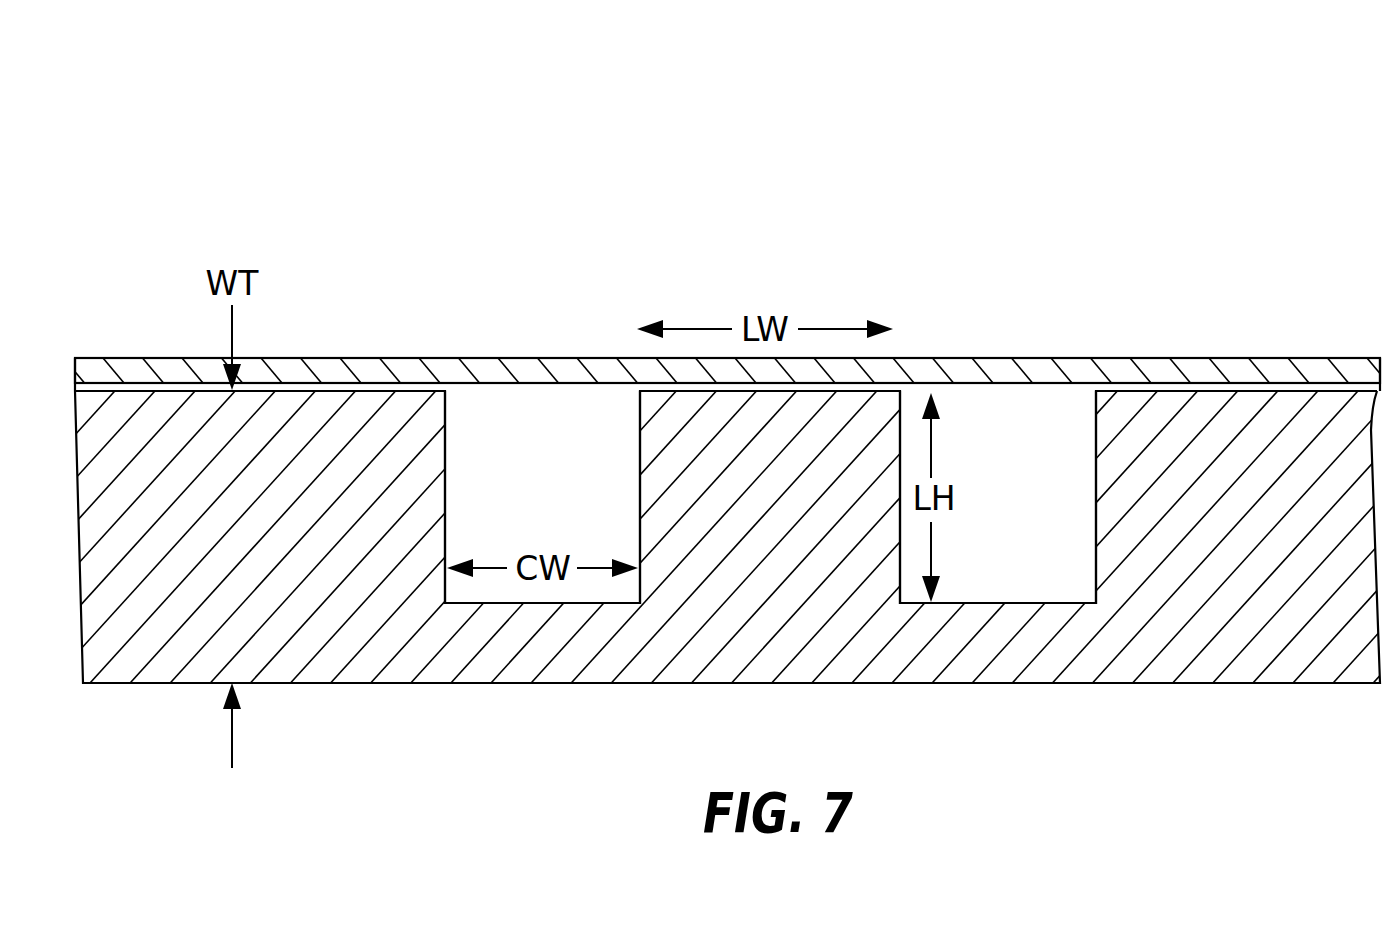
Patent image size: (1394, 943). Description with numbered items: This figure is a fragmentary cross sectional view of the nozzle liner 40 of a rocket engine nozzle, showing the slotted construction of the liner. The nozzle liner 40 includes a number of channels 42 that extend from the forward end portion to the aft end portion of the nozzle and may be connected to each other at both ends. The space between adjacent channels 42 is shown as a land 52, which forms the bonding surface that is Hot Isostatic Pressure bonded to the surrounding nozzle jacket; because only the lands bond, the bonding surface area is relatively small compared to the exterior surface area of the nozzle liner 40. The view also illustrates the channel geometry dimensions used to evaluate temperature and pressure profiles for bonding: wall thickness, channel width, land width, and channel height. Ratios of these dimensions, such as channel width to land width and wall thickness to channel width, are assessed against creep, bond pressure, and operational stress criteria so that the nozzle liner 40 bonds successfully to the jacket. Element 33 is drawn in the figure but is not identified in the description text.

The nozzle liner 40 is at (1056, 118).
The top layer 33 is at (1253, 358).
The land 52 is at (653, 388).
The channels 42 is at (608, 491).